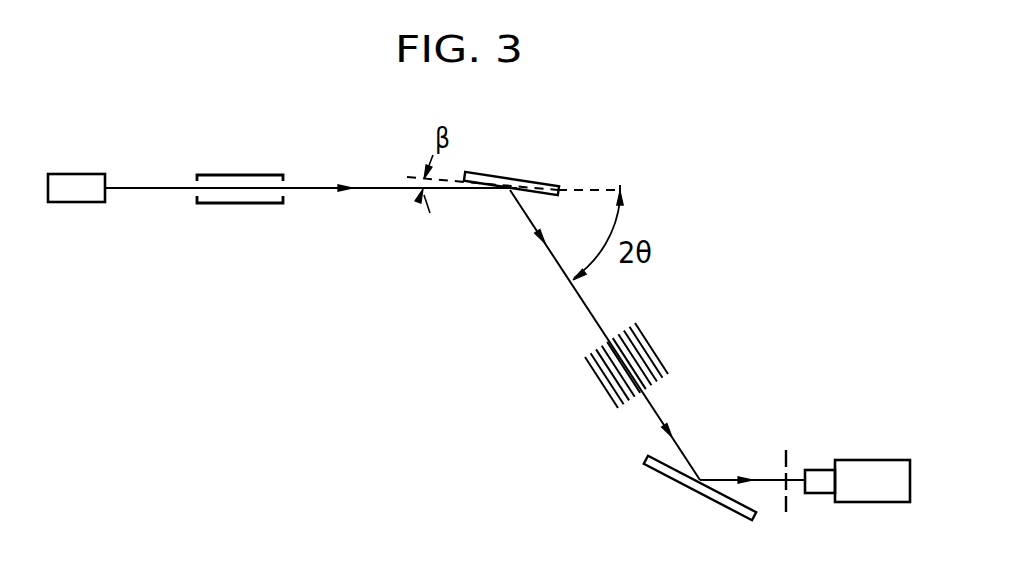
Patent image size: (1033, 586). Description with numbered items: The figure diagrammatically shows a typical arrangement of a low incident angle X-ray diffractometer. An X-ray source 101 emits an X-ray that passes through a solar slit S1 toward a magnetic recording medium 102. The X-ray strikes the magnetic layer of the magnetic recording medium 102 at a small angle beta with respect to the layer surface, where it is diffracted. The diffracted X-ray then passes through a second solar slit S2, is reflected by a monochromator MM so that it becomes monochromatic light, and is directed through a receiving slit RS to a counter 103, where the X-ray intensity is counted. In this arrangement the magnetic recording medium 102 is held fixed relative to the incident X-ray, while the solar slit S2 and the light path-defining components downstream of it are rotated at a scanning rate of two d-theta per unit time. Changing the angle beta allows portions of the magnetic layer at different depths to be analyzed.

The X-ray source 101 is at (80, 174).
The solar slit S1 is at (247, 174).
The magnetic recording medium 102 is at (513, 177).
The solar slit S2 is at (641, 365).
The monochromator MM is at (685, 484).
The receiving slit RS is at (793, 500).
The counter 103 is at (867, 468).